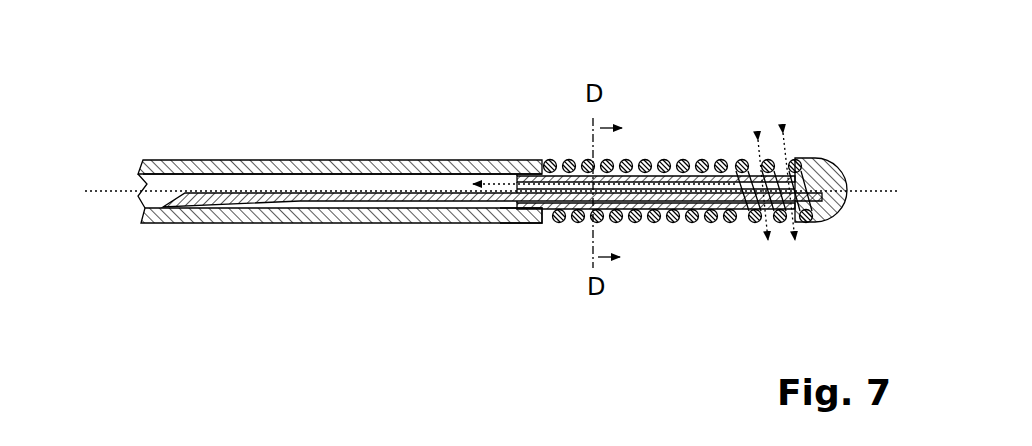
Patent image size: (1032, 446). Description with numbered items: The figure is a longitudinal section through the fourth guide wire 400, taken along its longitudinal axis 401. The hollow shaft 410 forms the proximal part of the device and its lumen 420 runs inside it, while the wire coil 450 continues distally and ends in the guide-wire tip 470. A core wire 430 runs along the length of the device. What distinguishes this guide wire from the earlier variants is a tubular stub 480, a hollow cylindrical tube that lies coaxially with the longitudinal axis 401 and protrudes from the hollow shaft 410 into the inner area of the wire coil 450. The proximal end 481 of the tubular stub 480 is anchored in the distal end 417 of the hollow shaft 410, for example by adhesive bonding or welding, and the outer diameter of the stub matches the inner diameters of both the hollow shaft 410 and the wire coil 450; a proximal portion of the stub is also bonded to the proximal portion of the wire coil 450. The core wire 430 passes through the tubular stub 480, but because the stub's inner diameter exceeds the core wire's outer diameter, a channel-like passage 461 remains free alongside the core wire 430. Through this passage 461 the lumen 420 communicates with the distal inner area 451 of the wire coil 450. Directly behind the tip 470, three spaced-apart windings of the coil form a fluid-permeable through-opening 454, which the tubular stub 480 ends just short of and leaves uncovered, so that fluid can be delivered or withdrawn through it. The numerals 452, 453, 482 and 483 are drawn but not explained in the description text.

The fourth guide wire 400 is at (140, 255).
The longitudinal axis 401 is at (110, 190).
The hollow shaft 410 is at (341, 230).
The distal end of the hollow shaft 417 is at (513, 223).
The lumen 420 is at (365, 185).
The core wire 430 is at (430, 192).
The wire coil 450 is at (663, 235).
The distal inner area of the wire coil 451 is at (742, 224).
The proximal end of coil 452 is at (542, 223).
The distal coil winding 453 is at (810, 222).
The through-opening 454 is at (780, 157).
The channel-like passage 461 is at (542, 158).
The guide-wire tip 470 is at (833, 224).
The tubular stub 480 is at (652, 158).
The proximal end of the tubular stub 481 is at (523, 159).
The distal end of distal tube 482 is at (723, 158).
The lumen of distal tube 483 is at (580, 176).